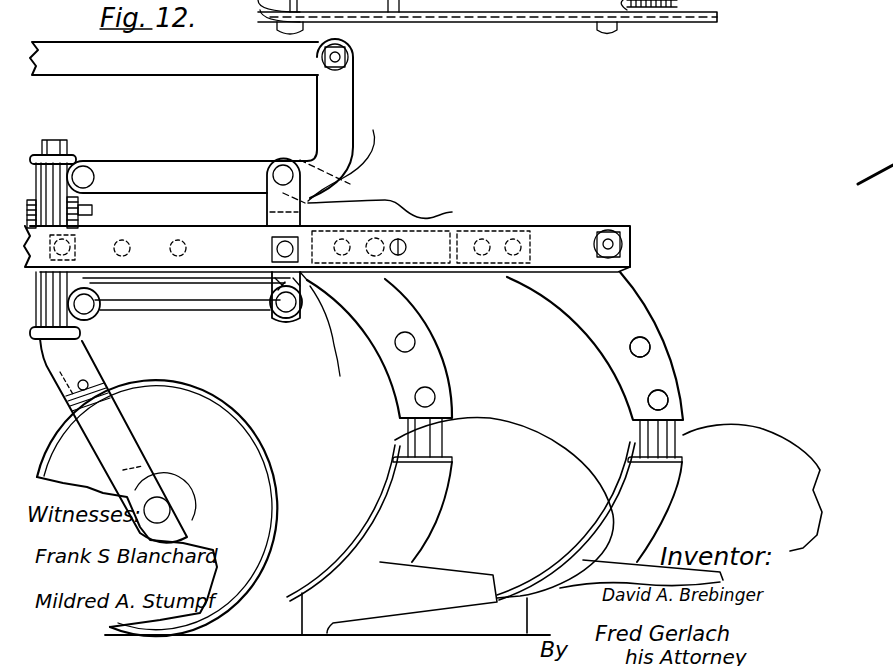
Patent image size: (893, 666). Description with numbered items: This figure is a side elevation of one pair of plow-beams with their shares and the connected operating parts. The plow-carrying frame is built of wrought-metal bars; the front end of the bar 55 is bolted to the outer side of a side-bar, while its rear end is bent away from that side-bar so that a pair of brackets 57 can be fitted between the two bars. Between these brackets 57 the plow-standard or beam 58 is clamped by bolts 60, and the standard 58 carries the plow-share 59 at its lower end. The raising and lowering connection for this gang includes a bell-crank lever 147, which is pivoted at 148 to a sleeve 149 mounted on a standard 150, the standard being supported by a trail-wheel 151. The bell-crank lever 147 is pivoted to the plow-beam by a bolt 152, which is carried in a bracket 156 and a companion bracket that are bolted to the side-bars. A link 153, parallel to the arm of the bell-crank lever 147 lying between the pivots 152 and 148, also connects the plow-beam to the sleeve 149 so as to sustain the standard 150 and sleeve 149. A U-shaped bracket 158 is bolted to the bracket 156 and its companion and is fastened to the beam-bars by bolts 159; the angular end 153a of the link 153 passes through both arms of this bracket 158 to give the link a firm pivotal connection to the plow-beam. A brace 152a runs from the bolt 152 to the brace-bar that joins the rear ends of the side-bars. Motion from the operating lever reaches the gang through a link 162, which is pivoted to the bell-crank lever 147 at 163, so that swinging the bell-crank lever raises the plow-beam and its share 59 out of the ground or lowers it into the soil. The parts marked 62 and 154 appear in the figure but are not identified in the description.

The bar 55 is at (143, 237).
The brackets 57 is at (627, 10).
The plow-standard 58 is at (430, 432).
The plow-share 59 is at (520, 458).
The bolts 60 is at (668, 395).
The bolt 62 is at (610, 10).
The bell-crank lever 147 is at (337, 98).
The pivot 148 is at (90, 172).
The sleeve 149 is at (50, 183).
The standard 150 is at (67, 150).
The trail-wheel 151 is at (237, 418).
The bolt 152 is at (283, 165).
The brace 152a is at (425, 208).
The link 153 is at (245, 320).
The angular end 153a is at (307, 285).
The set screw 154 is at (93, 210).
The bracket 156 is at (359, 155).
The U-shaped bracket 158 is at (247, 256).
The bolts 159 is at (290, 243).
The link 162 is at (233, 62).
The pivot 163 is at (347, 55).